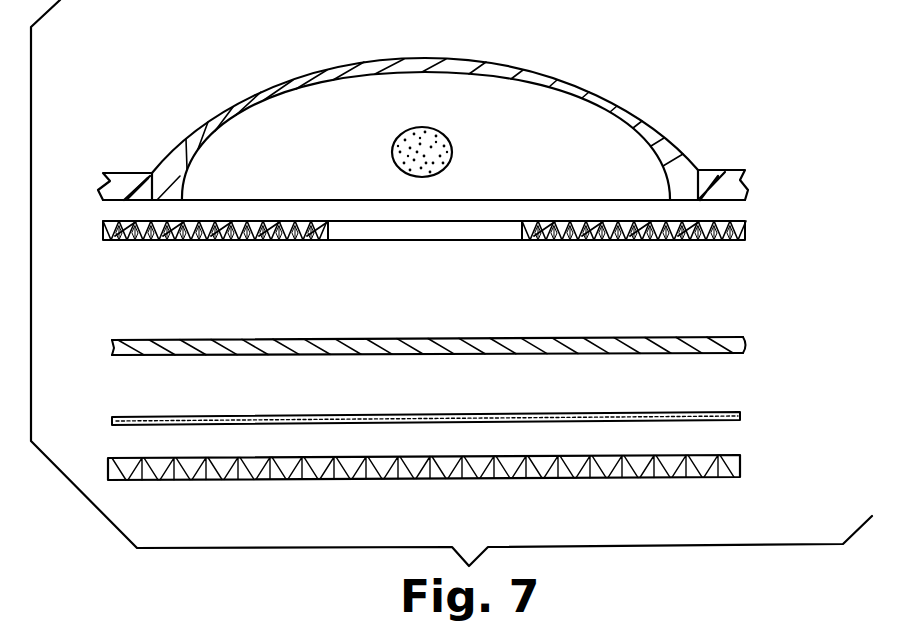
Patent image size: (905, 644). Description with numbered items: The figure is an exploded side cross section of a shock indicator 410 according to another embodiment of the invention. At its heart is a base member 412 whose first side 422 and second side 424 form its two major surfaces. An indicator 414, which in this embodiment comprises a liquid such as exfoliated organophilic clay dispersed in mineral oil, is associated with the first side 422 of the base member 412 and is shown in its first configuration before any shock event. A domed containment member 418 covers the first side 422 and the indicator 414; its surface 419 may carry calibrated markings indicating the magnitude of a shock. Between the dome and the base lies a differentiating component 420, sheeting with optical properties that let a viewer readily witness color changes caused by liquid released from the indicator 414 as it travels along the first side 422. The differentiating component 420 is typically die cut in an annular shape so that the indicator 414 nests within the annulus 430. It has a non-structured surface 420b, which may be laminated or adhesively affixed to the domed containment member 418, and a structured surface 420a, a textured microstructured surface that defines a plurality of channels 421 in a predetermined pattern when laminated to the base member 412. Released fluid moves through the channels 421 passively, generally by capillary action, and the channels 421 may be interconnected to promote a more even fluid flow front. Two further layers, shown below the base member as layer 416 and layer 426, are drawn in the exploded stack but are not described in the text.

The shock indicator 410 is at (433, 109).
The domed containment member 418 is at (445, 58).
The surface of the containment member 419 is at (710, 180).
The indicator 414 is at (393, 137).
The differentiating component 420 is at (478, 227).
The structured surface 420a is at (592, 240).
The non-structured surface 420b is at (633, 219).
The channels 421 is at (250, 240).
The annulus 430 is at (385, 249).
The base member 412 is at (429, 337).
The first side 422 is at (583, 337).
The second side 424 is at (540, 356).
The membrane layer 416 is at (740, 413).
The base layer 426 is at (740, 466).